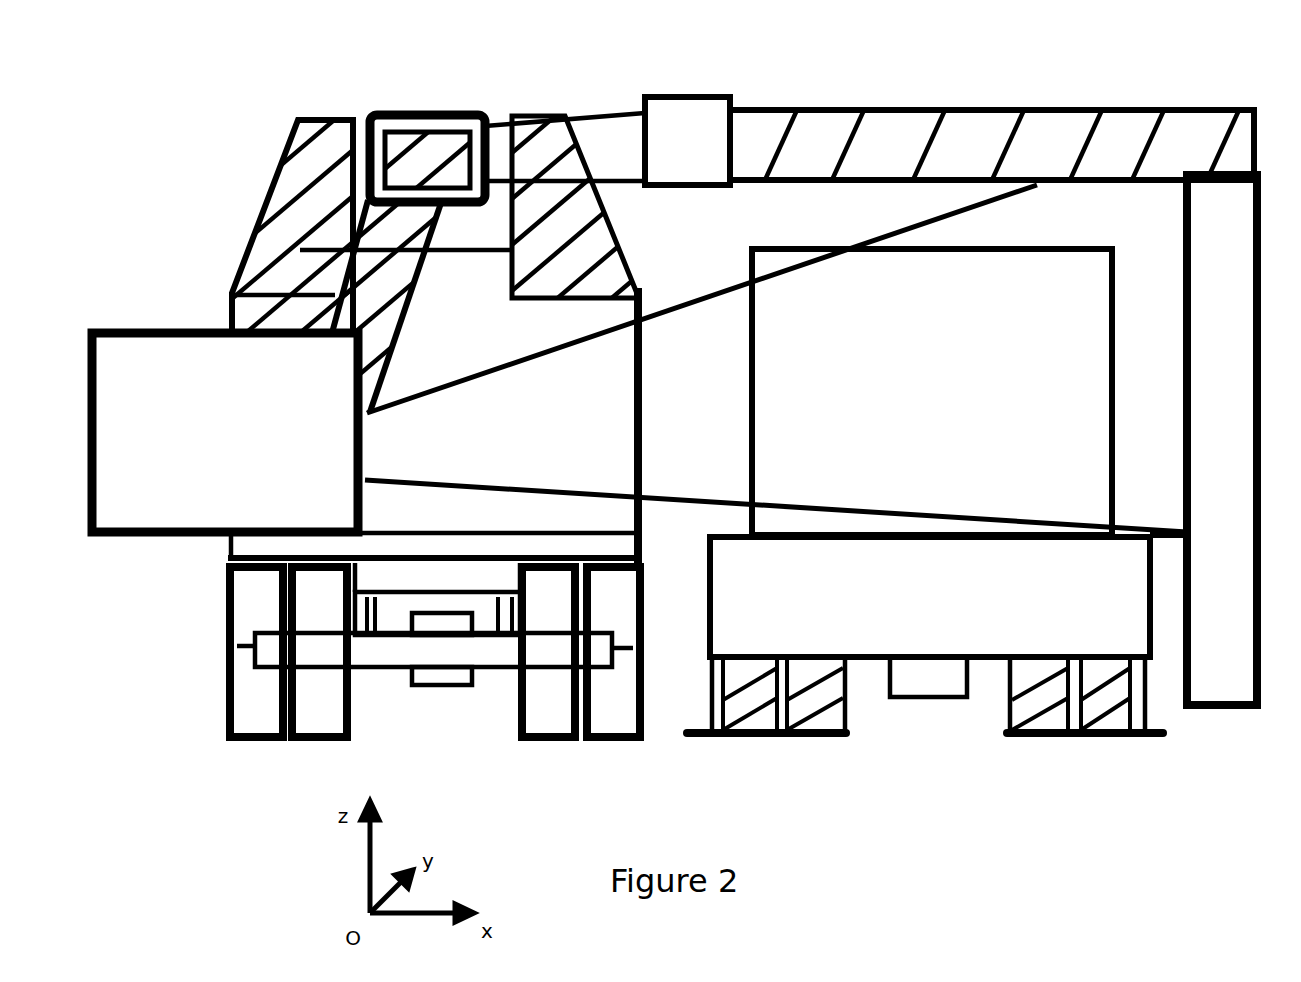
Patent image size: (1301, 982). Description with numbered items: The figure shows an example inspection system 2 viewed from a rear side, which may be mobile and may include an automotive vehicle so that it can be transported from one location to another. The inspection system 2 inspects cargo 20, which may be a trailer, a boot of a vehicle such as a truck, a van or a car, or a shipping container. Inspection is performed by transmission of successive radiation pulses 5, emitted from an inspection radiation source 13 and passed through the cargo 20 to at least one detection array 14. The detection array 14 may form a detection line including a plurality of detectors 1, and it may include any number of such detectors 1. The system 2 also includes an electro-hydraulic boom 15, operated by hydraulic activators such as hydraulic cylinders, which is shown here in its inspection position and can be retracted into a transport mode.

The detector 1 is at (1237, 110).
The inspection system 2 is at (253, 237).
The radiation pulses 5 is at (450, 393).
The inspection radiation source 13 is at (225, 432).
The detection array 14 is at (1040, 183).
The electro-hydraulic boom 15 is at (960, 108).
The cargo 20 is at (937, 491).